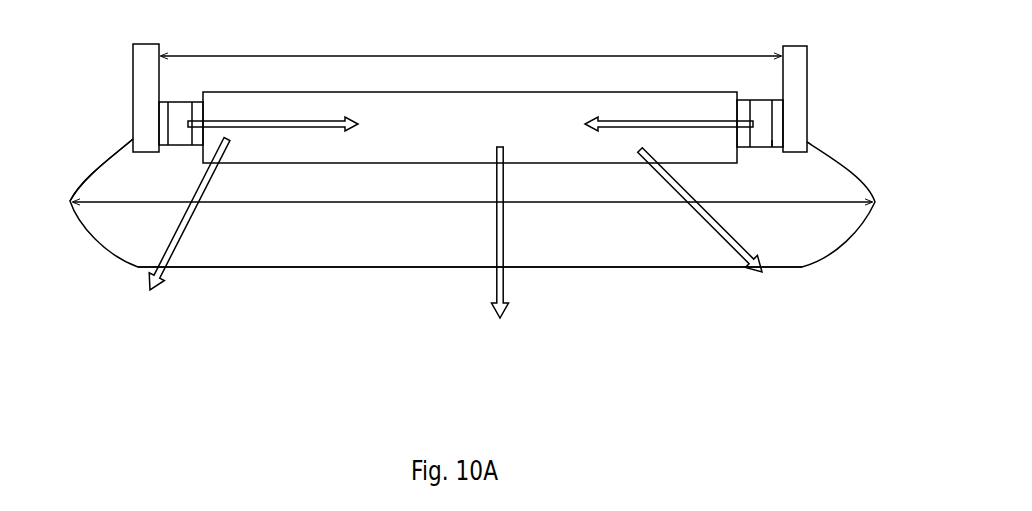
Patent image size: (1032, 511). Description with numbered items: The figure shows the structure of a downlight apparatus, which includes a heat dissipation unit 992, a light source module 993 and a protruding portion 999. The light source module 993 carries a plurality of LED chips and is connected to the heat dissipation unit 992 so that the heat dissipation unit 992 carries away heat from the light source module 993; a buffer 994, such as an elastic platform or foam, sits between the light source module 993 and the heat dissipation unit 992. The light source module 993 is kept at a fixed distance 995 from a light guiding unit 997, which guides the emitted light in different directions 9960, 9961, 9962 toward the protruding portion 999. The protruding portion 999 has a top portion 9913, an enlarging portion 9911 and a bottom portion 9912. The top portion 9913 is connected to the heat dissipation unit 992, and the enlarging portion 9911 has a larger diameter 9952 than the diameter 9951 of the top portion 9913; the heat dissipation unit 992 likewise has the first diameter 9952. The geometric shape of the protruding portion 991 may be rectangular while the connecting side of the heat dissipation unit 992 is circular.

The protruding portion 991 is at (838, 156).
The enlarging portion 9911 is at (70, 201).
The bottom portion 9912 is at (372, 270).
The top portion 9913 is at (115, 163).
The heat dissipation unit 992 is at (793, 85).
The light source module 993 is at (757, 108).
The buffer 994 is at (777, 143).
The fixed distance 995 is at (745, 138).
The light guiding unit 997 is at (567, 103).
The protruding portion 999 is at (635, 253).
The diameter of the top portion 9951 is at (245, 207).
The first diameter 9952 is at (280, 54).
The direction 9960 is at (649, 120).
The direction 9961 is at (507, 298).
The direction 9962 is at (740, 245).